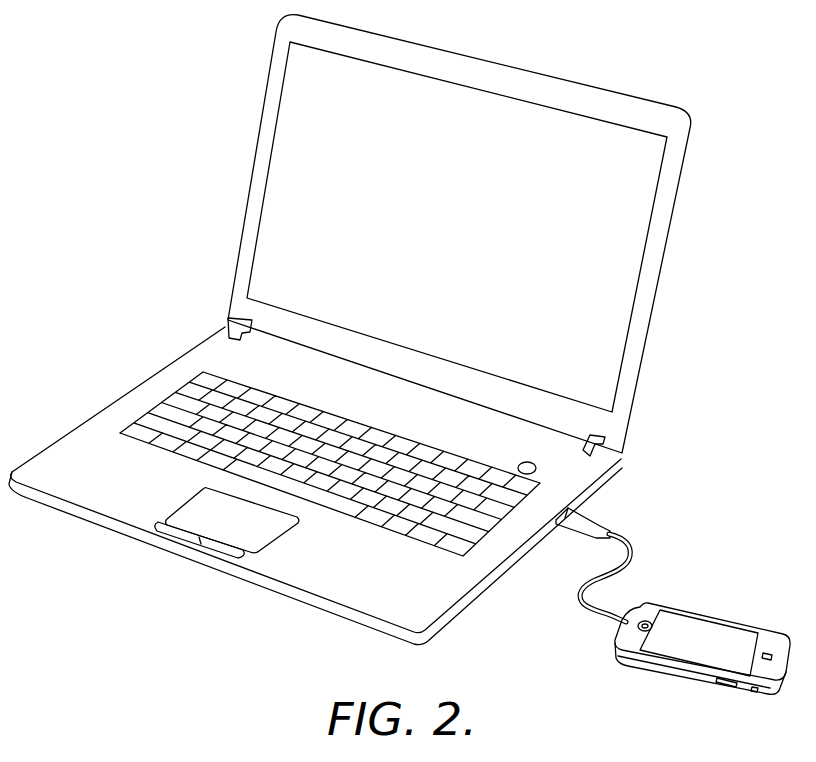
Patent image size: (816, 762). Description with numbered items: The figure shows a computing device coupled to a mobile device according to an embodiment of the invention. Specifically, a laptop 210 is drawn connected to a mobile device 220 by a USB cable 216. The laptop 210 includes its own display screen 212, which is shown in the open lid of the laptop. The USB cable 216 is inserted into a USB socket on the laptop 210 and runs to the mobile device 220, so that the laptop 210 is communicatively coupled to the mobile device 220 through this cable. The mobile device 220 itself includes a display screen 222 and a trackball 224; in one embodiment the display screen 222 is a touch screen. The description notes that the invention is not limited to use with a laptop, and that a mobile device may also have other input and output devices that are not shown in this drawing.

The laptop 210 is at (350, 330).
The display screen 212 is at (254, 160).
The USB cable 216 is at (579, 593).
The mobile device 220 is at (713, 647).
The display screen 222 is at (704, 627).
The trackball 224 is at (648, 618).